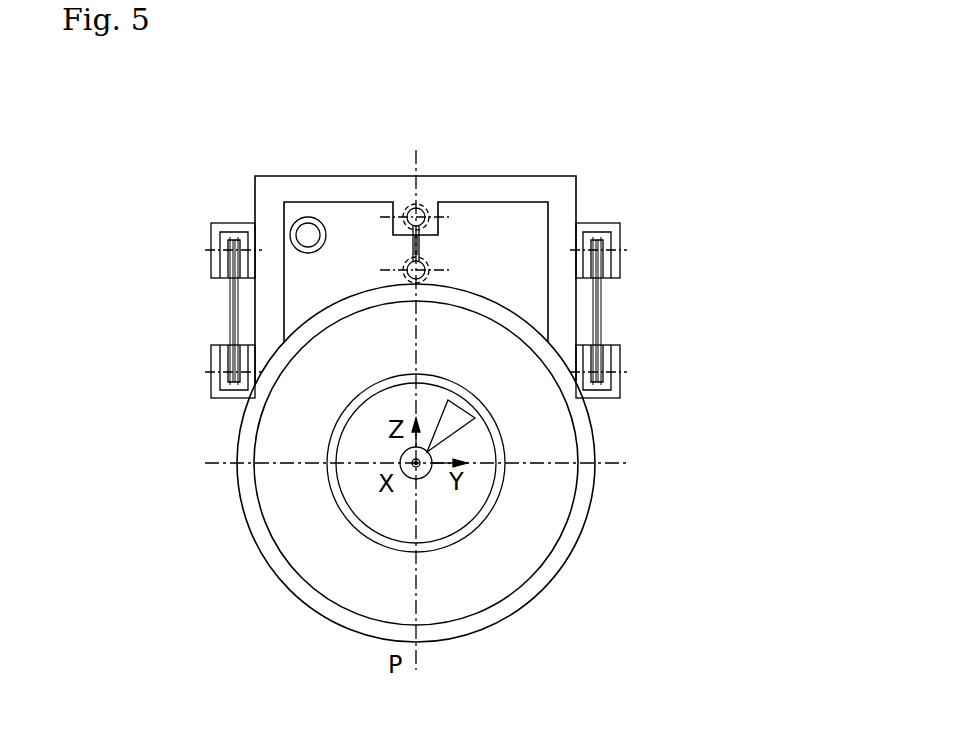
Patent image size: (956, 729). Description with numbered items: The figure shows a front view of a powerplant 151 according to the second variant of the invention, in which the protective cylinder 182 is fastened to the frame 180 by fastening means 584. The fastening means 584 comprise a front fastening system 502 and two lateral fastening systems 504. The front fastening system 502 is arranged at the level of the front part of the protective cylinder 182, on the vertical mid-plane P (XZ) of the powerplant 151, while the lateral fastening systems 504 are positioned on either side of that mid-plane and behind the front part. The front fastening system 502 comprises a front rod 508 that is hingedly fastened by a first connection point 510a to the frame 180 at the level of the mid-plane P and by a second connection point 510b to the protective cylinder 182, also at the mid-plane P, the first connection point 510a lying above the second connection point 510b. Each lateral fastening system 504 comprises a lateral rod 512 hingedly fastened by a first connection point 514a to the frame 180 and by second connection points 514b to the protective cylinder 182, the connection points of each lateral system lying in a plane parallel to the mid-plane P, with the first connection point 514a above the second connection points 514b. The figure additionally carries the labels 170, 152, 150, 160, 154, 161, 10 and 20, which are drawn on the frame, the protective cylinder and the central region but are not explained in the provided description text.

The frame 180 is at (340, 187).
The opening 170 is at (298, 232).
The first connection point 510a is at (427, 214).
The second connection point 510b is at (430, 268).
The front rod 508 is at (420, 242).
The front fastening system 502 is at (625, 156).
The fastening means 584 is at (733, 189).
The lateral fastening system 504 is at (698, 300).
The powerplant 151 is at (145, 225).
The first connection point 514a is at (232, 250).
The second connection point 514b is at (243, 377).
The lateral rod 512 is at (245, 322).
The second clamping bracket 152 is at (731, 575).
The clamping device 150 is at (682, 625).
The protective cylinder 182 is at (530, 592).
The rotary disc 160 is at (309, 526).
The hub ring 154 is at (463, 535).
The index marker 161 is at (452, 418).
The first zone 10 is at (403, 526).
The second zone 20 is at (398, 608).